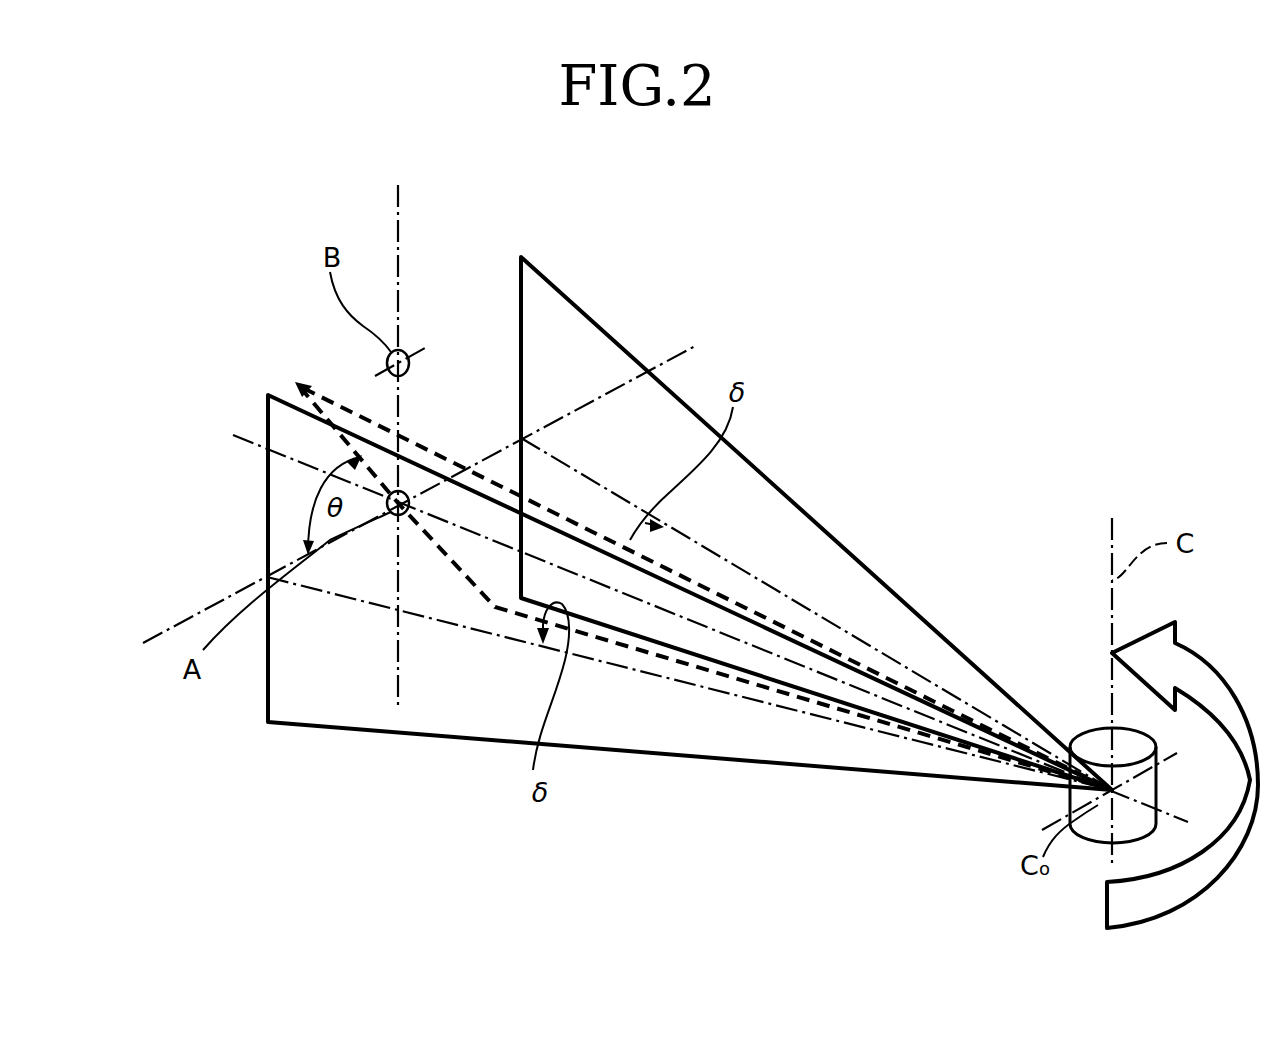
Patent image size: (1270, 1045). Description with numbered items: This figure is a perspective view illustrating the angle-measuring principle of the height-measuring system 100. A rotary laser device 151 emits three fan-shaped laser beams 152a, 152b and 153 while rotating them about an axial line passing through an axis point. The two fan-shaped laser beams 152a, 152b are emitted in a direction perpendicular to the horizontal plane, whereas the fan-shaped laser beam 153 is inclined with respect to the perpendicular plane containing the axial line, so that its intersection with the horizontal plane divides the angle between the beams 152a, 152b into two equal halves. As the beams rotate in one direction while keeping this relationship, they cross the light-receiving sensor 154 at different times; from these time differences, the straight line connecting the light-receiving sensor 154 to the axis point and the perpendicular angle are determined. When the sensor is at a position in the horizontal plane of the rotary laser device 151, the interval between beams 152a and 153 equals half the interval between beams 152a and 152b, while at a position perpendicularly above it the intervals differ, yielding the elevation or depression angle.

The inspection/illumination apparatus 100 is at (893, 475).
The rotary laser device 151 is at (1093, 740).
The fan-shaped laser beam 152a is at (483, 690).
The fan-shaped laser beam 152b is at (566, 318).
The fan-shaped laser beam 153 is at (317, 390).
The light-receiving sensor 154 is at (397, 516).